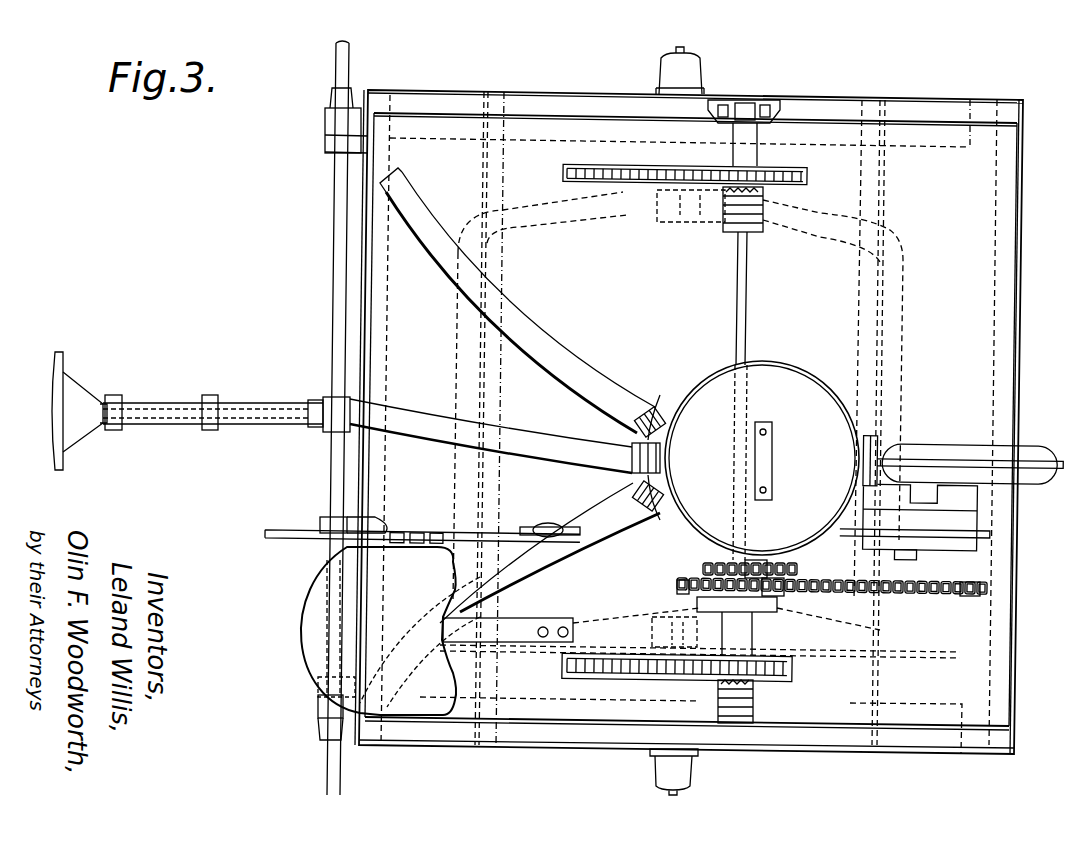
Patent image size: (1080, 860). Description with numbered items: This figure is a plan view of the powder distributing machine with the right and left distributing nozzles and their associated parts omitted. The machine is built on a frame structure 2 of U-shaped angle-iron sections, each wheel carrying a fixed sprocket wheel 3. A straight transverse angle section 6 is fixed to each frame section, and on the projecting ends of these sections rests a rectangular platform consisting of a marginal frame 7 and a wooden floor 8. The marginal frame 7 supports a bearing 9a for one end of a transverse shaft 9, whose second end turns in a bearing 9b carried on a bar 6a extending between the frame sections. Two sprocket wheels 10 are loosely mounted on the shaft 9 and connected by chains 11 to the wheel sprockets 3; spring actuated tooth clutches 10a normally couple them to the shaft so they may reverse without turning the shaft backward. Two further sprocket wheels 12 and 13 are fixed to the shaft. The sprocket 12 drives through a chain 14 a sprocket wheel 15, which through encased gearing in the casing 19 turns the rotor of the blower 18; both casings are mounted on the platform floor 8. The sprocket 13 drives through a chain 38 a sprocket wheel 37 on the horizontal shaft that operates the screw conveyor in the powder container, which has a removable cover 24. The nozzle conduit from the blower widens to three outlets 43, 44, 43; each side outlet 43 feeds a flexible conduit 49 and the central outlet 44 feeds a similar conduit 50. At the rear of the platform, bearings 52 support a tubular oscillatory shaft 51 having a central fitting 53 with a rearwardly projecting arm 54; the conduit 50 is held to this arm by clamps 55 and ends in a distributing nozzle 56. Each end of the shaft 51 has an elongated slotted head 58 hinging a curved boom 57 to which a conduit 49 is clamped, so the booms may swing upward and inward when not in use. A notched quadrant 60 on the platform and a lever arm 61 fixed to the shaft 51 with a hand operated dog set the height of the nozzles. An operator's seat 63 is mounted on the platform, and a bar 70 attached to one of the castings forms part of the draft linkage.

The frame structure 2 is at (458, 380).
The sprocket wheel 3 is at (590, 684).
The angle section 6 is at (483, 168).
The bar 6a is at (795, 668).
The marginal frame 7 is at (1018, 168).
The wooden floor 8 is at (545, 165).
The shaft 9 is at (750, 302).
The bearing 9a is at (757, 140).
The bearing 9b is at (754, 634).
The sprocket wheel 10 is at (678, 226).
The spring actuated tooth clutch 10a is at (765, 192).
The chain 11 is at (632, 668).
The sprocket wheel 12 is at (677, 590).
The sprocket wheel 13 is at (703, 570).
The chain 14 is at (805, 585).
The sprocket wheel 15 is at (968, 598).
The blower 18 is at (1020, 448).
The casing 19 is at (952, 548).
The cover 24 is at (800, 378).
The sprocket wheel 37 is at (760, 560).
The chain 38 is at (795, 567).
The side nozzle outlet 43 is at (656, 418).
The central outlet 44 is at (660, 463).
The conduit 49 is at (585, 372).
The conduit 50 is at (540, 450).
The oscillatory shaft 51 is at (333, 262).
The bearing 52 is at (326, 144).
The fitting 53 is at (336, 397).
The arm 54 is at (185, 400).
The clamp 55 is at (208, 430).
The distributing nozzle 56 is at (55, 418).
The boom 57 is at (338, 62).
The head 58 is at (328, 97).
The notched quadrant 60 is at (388, 533).
The lever arm 61 is at (560, 525).
The operator's seat 63 is at (295, 618).
The bar 70 is at (672, 622).